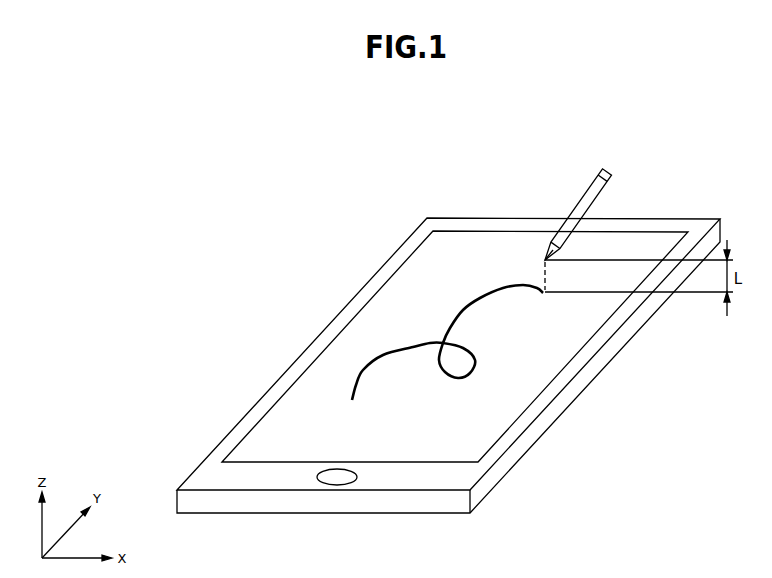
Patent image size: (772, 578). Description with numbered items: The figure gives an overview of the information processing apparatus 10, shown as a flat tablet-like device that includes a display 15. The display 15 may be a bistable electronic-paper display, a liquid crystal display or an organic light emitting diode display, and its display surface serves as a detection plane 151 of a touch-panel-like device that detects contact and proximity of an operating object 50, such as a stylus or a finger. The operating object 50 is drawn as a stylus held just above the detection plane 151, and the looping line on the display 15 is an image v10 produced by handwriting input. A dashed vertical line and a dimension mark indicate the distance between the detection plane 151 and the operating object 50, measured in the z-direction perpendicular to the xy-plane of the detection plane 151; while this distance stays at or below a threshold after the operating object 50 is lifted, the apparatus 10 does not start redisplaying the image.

The information processing apparatus 10 is at (684, 219).
The display 15 is at (535, 232).
The detection plane 151 is at (478, 248).
The operating object 50 is at (606, 165).
The image v10 is at (398, 349).